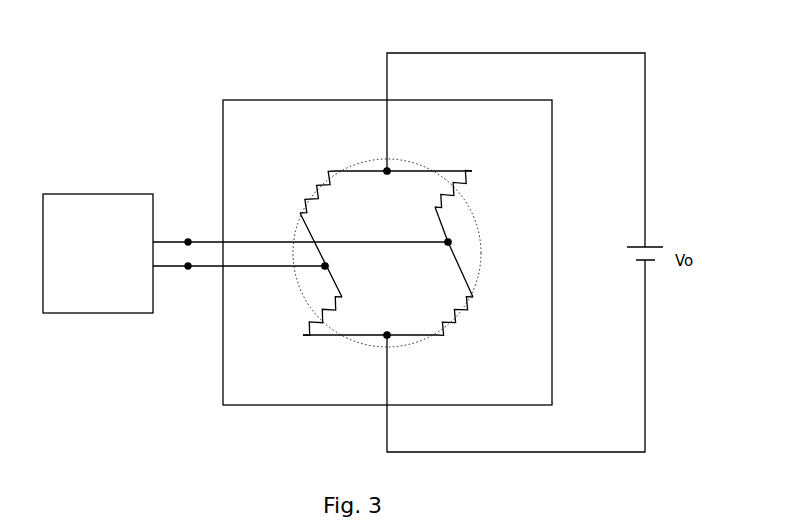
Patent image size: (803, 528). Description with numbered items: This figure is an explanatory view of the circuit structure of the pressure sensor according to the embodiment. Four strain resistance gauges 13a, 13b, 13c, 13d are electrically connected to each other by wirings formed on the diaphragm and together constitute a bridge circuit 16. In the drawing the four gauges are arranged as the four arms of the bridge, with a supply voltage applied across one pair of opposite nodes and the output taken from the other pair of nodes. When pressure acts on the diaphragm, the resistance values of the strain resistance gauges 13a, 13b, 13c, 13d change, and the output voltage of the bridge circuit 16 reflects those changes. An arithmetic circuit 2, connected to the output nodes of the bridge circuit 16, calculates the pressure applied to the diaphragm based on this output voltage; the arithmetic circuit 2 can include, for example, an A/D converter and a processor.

The arithmetic circuit 2 is at (110, 193).
The bridge circuit 16 is at (270, 100).
The strain resistance gauge 13a is at (477, 194).
The strain resistance gauge 13b is at (477, 320).
The strain resistance gauge 13c is at (299, 316).
The strain resistance gauge 13d is at (296, 191).